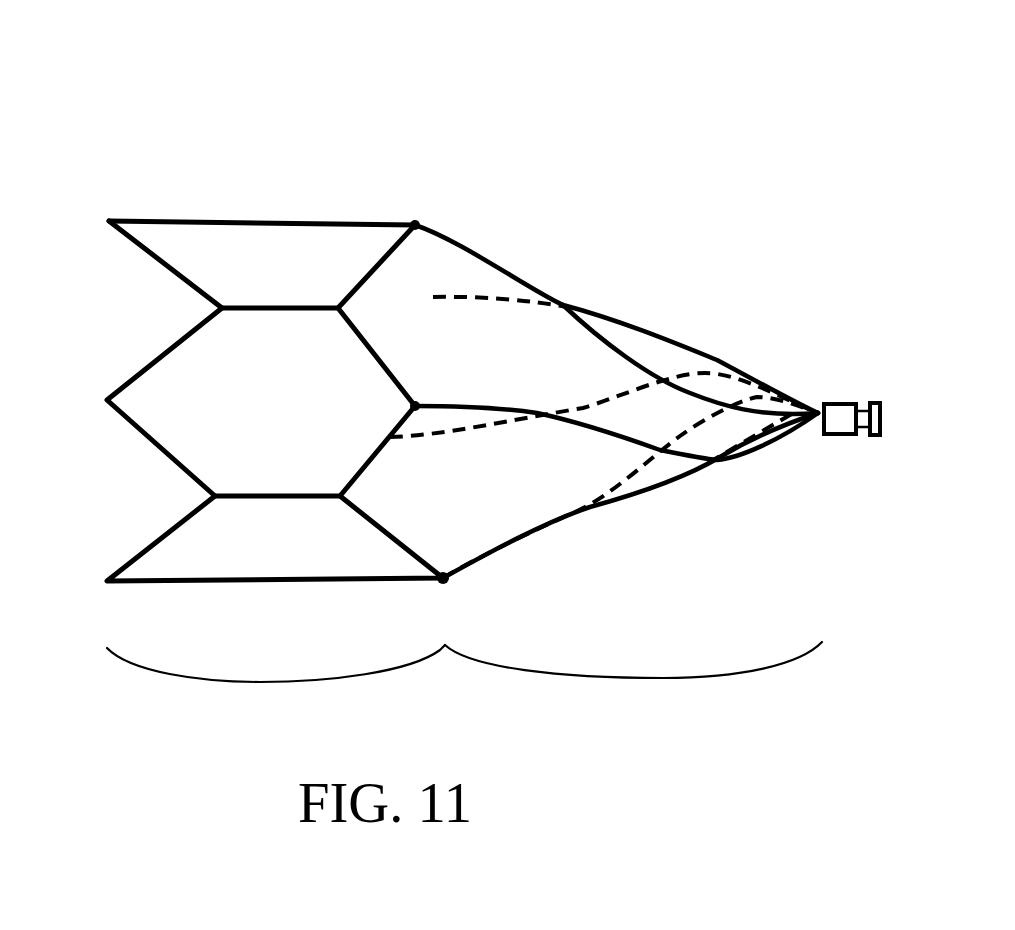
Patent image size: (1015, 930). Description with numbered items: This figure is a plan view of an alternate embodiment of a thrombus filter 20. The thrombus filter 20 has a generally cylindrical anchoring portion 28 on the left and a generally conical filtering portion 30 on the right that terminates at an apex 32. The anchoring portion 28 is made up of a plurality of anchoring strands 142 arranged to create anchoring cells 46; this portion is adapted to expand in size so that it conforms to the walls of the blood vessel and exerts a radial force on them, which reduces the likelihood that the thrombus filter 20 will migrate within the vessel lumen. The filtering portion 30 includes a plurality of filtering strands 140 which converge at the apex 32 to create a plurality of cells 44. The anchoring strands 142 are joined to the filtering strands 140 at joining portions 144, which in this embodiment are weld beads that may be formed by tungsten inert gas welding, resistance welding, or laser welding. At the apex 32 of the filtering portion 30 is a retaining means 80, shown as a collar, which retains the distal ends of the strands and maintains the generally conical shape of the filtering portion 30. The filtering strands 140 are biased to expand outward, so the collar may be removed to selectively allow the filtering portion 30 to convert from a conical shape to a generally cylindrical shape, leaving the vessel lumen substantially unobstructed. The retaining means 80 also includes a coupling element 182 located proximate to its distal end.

The thrombus filter 20 is at (748, 138).
The anchoring portion 28 is at (260, 682).
The filtering portion 30 is at (668, 678).
The apex 32 is at (914, 529).
The cells 44 is at (647, 352).
The anchoring cells 46 is at (323, 246).
The retaining means 80 is at (835, 417).
The filtering strands 140 is at (537, 280).
The anchoring strands 142 is at (263, 218).
The joining portions 144 is at (417, 222).
The coupling element 182 is at (863, 455).